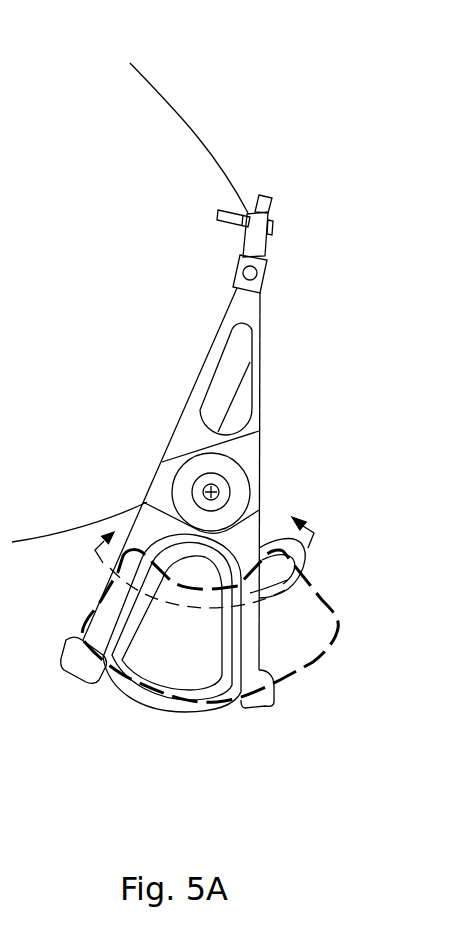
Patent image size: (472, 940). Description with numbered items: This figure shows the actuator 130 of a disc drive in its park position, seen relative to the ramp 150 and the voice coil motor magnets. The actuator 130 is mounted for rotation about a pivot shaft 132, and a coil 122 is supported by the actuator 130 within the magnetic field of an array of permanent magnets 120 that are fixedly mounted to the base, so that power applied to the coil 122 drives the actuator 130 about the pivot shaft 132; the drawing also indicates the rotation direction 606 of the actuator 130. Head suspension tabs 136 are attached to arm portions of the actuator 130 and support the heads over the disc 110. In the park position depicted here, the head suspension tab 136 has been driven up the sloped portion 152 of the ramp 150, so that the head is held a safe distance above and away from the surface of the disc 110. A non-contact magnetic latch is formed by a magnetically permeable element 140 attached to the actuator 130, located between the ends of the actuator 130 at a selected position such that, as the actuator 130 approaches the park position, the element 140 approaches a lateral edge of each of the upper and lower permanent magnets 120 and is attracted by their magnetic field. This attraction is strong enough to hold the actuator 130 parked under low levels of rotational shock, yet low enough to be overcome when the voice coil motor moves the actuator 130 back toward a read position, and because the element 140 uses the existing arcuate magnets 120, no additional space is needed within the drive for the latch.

The disc 110 is at (98, 384).
The permanent magnets 120 is at (300, 643).
The coil 122 is at (160, 702).
The actuator 130 is at (255, 442).
The pivot shaft 132 is at (272, 204).
The head suspension tab 136 is at (267, 240).
The magnetically permeable element 140 is at (310, 583).
The ramp 150 is at (220, 238).
The sloped portion 152 is at (222, 216).
The rotation direction 606 is at (204, 539).